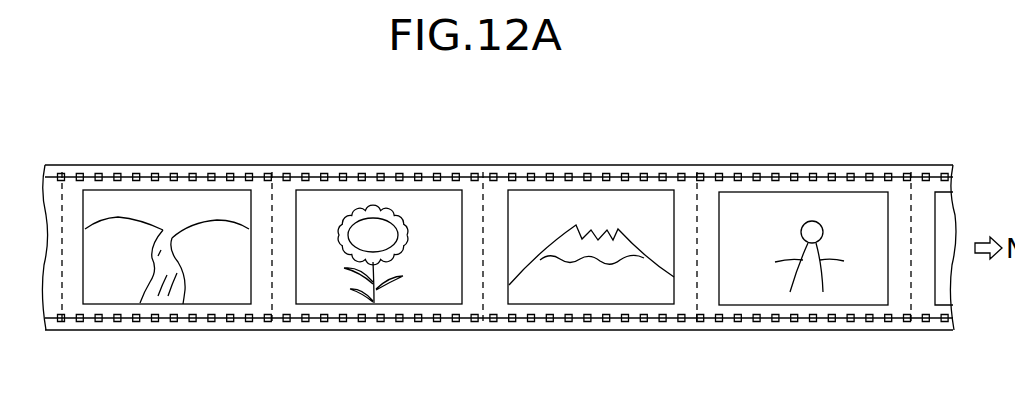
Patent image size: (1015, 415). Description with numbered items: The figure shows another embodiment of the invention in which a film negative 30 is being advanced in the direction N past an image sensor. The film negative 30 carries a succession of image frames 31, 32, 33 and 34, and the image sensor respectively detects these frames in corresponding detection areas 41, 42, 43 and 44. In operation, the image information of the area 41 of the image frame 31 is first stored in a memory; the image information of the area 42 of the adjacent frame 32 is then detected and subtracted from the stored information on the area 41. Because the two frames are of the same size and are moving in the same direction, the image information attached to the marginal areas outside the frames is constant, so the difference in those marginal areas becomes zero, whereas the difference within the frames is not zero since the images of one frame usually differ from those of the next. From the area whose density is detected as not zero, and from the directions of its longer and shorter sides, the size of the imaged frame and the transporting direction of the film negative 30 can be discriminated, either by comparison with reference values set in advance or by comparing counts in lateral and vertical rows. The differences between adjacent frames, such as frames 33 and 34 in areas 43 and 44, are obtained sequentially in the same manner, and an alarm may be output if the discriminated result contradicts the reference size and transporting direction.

The film negative 30 is at (658, 165).
The image frame 31 is at (805, 191).
The image frame 32 is at (537, 190).
The image frame 33 is at (402, 190).
The image frame 34 is at (218, 190).
The detection area 41 is at (807, 321).
The detection area 42 is at (598, 321).
The detection area 43 is at (408, 321).
The detection area 44 is at (110, 323).